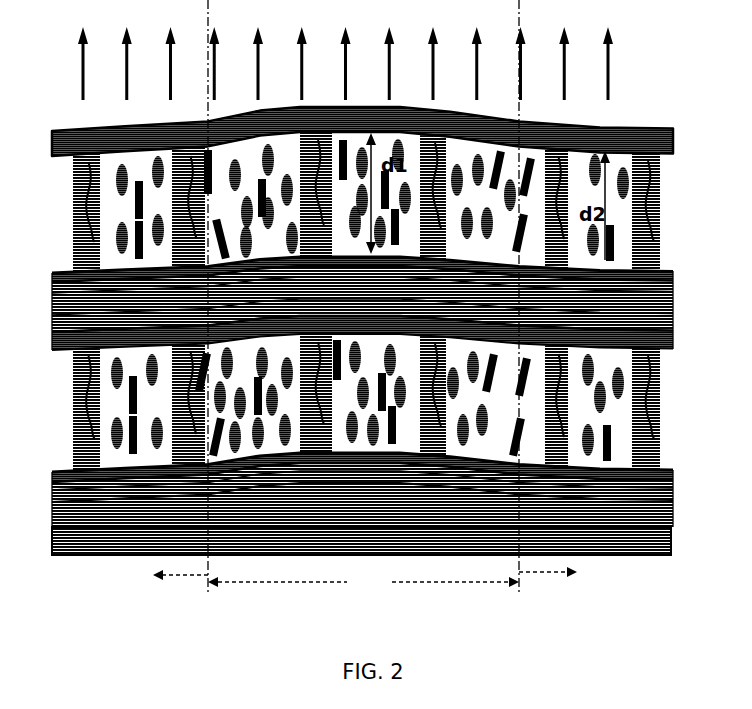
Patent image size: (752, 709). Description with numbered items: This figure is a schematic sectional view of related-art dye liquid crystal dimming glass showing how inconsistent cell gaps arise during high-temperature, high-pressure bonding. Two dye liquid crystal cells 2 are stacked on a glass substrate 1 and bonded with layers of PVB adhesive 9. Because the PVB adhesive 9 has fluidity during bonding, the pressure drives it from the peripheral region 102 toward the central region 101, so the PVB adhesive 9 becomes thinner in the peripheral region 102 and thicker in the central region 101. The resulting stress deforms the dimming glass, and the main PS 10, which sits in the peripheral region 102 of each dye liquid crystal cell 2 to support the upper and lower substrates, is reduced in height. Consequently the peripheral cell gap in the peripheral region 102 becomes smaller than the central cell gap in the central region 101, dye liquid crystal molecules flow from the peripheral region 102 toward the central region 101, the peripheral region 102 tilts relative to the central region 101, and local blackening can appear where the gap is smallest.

The glass substrate 1 is at (658, 545).
The dye liquid crystal cell 2 is at (374, 319).
The PVB adhesive 9 is at (642, 317).
The main PS 10 is at (95, 235).
The central region 101 is at (363, 576).
The peripheral region 102 is at (369, 575).